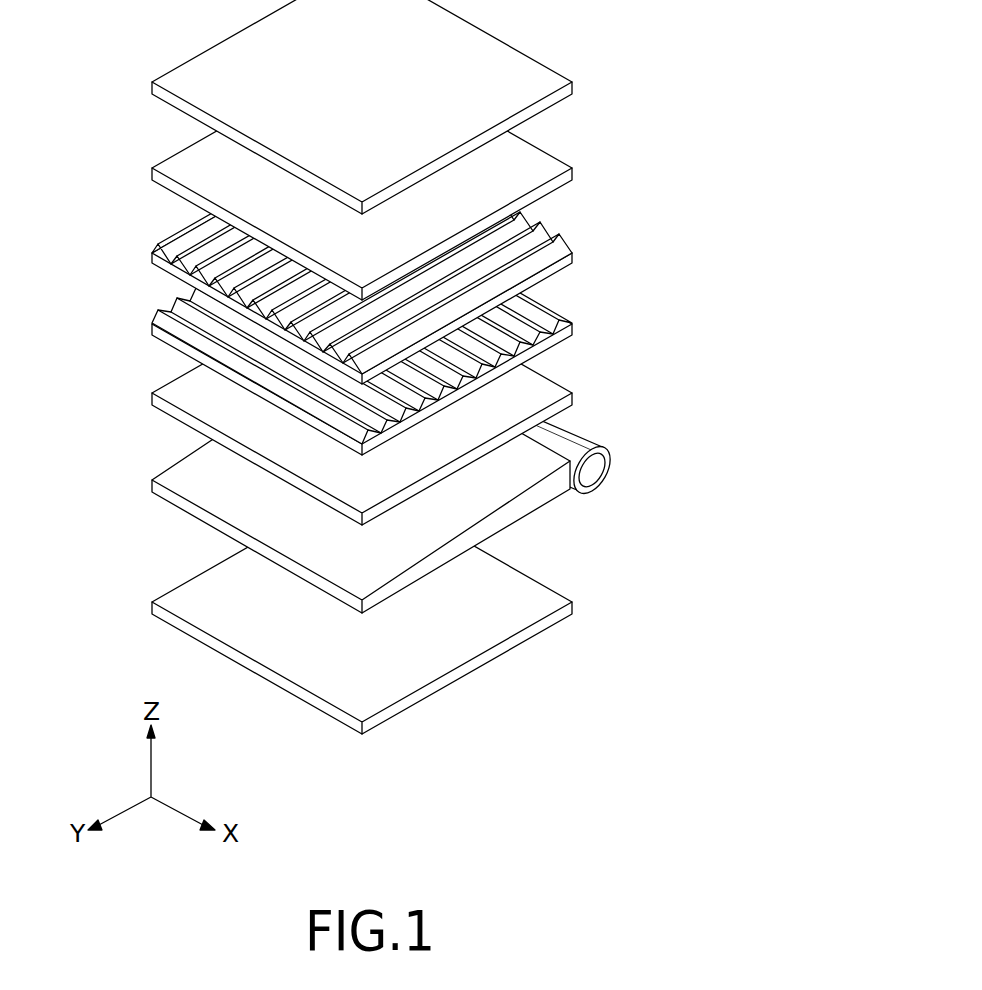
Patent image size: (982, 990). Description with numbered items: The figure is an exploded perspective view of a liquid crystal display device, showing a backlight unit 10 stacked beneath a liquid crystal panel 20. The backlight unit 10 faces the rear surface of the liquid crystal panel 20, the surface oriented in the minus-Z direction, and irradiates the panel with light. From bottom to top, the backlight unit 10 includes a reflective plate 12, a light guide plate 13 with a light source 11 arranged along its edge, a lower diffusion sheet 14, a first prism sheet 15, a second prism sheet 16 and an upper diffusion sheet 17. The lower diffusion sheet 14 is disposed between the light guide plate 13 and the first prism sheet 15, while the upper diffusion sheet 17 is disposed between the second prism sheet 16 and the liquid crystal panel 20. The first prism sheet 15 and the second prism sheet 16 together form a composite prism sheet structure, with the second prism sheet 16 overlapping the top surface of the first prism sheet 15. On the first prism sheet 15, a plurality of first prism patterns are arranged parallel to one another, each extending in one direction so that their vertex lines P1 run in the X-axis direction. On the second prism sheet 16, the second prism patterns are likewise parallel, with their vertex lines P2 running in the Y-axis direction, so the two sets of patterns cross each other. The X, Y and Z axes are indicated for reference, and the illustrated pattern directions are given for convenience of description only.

The backlight unit 10 is at (412, 391).
The light source 11 is at (593, 473).
The reflective plate 12 is at (513, 640).
The light guide plate 13 is at (535, 500).
The lower diffusion sheet 14 is at (570, 393).
The first prism sheet 15 is at (377, 327).
The second prism sheet 16 is at (404, 254).
The upper diffusion sheet 17 is at (404, 174).
The liquid crystal panel 20 is at (570, 85).
The vertex lines of first prism patterns P1 is at (192, 322).
The vertex lines of second prism patterns P2 is at (540, 242).